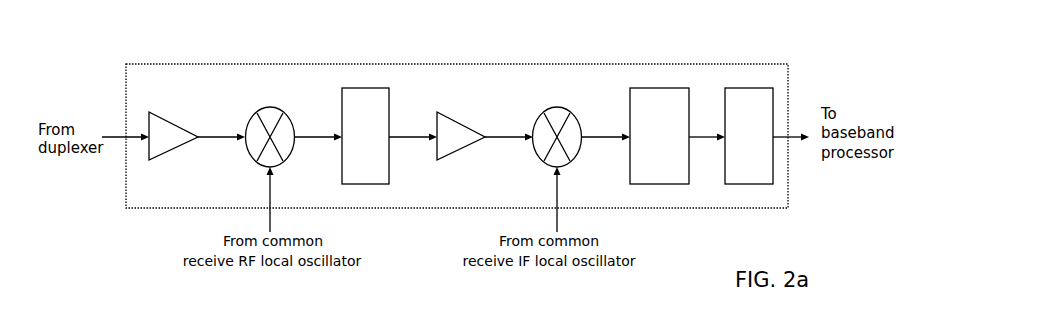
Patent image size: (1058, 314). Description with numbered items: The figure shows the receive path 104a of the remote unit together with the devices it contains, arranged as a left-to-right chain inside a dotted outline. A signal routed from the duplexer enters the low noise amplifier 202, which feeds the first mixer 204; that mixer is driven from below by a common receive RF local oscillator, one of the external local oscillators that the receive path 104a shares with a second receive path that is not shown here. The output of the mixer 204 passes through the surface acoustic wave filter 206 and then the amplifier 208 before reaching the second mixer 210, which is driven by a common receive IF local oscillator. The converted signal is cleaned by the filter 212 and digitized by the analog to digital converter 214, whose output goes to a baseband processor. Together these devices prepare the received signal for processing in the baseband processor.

The receive path 104a is at (458, 63).
The low noise amplifier 202 is at (149, 111).
The mixer 204 is at (270, 107).
The surface acoustic wave filter 206 is at (389, 110).
The amplifier 208 is at (437, 160).
The mixer 210 is at (557, 107).
The filter 212 is at (659, 184).
The analog to digital converter 214 is at (749, 184).